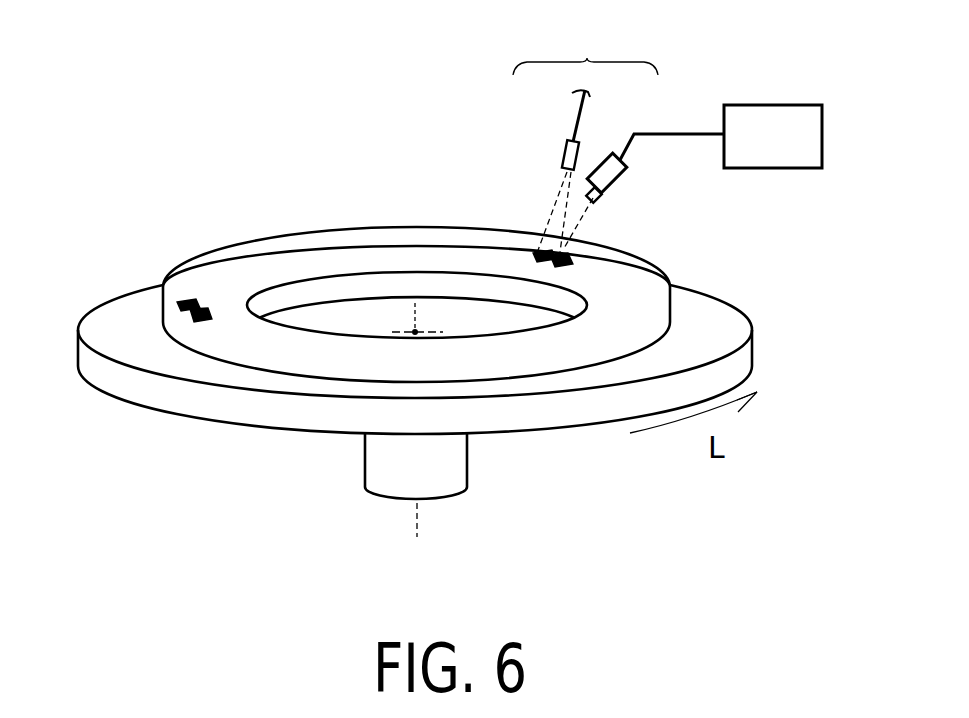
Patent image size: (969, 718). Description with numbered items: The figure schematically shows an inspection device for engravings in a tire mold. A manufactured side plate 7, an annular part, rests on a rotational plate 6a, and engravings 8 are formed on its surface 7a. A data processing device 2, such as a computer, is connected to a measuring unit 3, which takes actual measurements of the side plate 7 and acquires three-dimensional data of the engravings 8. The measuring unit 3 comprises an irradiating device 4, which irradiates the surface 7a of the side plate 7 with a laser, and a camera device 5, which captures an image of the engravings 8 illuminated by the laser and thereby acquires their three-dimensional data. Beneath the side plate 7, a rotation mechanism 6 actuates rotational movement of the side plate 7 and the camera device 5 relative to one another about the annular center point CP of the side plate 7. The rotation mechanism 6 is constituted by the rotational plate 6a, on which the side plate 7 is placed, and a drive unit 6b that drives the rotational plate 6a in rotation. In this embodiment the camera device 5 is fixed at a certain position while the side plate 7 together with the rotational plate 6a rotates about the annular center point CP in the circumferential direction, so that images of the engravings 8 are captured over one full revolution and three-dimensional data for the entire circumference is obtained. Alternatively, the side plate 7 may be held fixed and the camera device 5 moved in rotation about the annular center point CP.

The data processing device 2 is at (747, 112).
The measuring unit 3 is at (587, 58).
The irradiating device 4 is at (565, 150).
The camera device 5 is at (603, 153).
The rotation mechanism 6 is at (415, 428).
The rotational plate 6a is at (222, 408).
The drive unit 6b is at (460, 460).
The side plate 7 is at (416, 259).
The surface of the side plate 7a is at (452, 256).
The engravings 8 is at (190, 303).
The annular center point CP is at (415, 332).